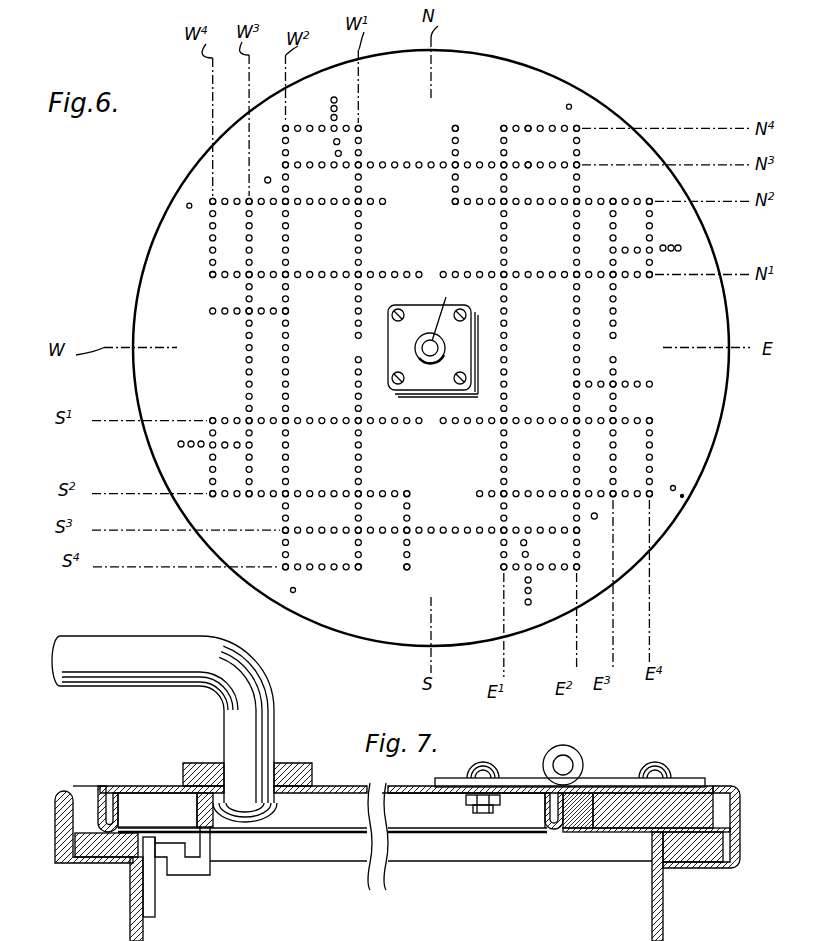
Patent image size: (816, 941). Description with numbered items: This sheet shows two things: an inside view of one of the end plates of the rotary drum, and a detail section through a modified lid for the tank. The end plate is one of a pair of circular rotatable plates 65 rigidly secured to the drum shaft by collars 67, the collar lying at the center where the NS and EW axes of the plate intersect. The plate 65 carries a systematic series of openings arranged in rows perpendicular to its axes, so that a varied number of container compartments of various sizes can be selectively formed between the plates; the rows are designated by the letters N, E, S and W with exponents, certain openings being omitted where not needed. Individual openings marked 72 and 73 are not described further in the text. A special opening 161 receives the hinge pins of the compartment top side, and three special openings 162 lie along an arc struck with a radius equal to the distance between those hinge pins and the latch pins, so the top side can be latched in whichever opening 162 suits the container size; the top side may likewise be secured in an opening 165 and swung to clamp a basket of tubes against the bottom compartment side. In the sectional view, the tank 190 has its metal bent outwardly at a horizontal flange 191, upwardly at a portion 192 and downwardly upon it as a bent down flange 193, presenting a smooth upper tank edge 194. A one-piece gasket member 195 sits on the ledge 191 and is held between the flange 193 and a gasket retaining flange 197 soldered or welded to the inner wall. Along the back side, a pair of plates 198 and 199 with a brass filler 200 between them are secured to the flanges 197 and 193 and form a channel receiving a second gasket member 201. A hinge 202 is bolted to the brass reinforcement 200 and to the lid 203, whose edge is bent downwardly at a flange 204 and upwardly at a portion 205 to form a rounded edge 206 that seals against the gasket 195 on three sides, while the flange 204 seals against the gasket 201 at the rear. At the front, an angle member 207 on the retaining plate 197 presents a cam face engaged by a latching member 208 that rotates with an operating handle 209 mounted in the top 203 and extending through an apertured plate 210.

In FIG. 6, the rotatable plate 65 is at (157, 298).
In FIG. 6, the collar 67 is at (423, 377).
In FIG. 6, the hole 72 is at (528, 163).
In FIG. 6, the hole 73 is at (528, 126).
In FIG. 6, the special opening 161 is at (571, 105).
In FIG. 6, the special openings 162 is at (338, 117).
In FIG. 6, the opening 165 is at (676, 489).
In FIG. 7, the tank 190 is at (130, 895).
In FIG. 7, the horizontal flange 191 is at (97, 862).
In FIG. 7, the upwardly bent portion 192 is at (55, 822).
In FIG. 7, the bent down flange 193 is at (78, 797).
In FIG. 7, the upper tank edge 194 is at (100, 787).
In FIG. 7, the gasket member 195 is at (710, 865).
In FIG. 7, the gasket retaining flange 197 is at (146, 917).
In FIG. 7, the plate 198 is at (673, 787).
In FIG. 7, the plate 199 is at (623, 832).
In FIG. 7, the brass filler 200 is at (680, 803).
In FIG. 7, the second gasket member 201 is at (567, 795).
In FIG. 7, the hinge 202 is at (621, 778).
In FIG. 7, the lid 203 is at (420, 797).
In FIG. 7, the bent down flange 204 is at (547, 831).
In FIG. 7, the upwardly bent portion 205 is at (513, 766).
In FIG. 7, the rounded edge 206 is at (115, 817).
In FIG. 7, the angle member 207 is at (160, 846).
In FIG. 7, the latching member 208 is at (206, 845).
In FIG. 7, the operating handle 209 is at (258, 724).
In FIG. 7, the apertured plate 210 is at (300, 752).